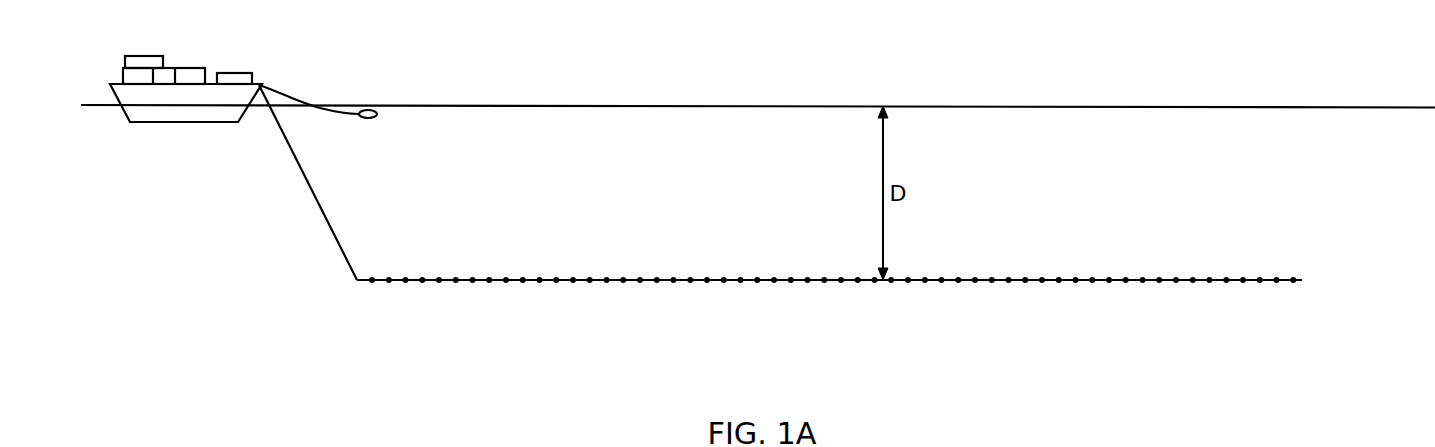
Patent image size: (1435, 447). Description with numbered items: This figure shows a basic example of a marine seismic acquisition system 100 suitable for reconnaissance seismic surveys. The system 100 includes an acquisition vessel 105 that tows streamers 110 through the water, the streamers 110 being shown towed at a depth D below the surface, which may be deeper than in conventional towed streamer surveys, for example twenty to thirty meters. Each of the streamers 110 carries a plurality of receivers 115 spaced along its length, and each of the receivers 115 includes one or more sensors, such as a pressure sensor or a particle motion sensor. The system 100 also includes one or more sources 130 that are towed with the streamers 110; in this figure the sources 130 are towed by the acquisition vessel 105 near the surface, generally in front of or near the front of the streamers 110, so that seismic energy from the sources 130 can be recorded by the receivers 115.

The marine seismic acquisition system 100 is at (708, 82).
The acquisition vessel 105 is at (180, 68).
The streamers 110 is at (362, 279).
The receivers 115 is at (441, 279).
The sources 130 is at (377, 114).